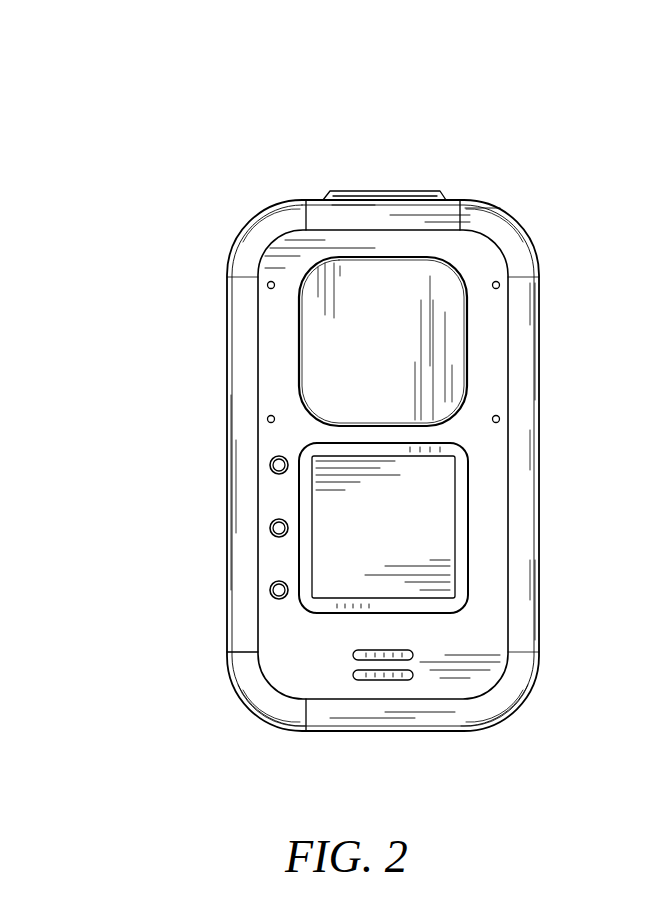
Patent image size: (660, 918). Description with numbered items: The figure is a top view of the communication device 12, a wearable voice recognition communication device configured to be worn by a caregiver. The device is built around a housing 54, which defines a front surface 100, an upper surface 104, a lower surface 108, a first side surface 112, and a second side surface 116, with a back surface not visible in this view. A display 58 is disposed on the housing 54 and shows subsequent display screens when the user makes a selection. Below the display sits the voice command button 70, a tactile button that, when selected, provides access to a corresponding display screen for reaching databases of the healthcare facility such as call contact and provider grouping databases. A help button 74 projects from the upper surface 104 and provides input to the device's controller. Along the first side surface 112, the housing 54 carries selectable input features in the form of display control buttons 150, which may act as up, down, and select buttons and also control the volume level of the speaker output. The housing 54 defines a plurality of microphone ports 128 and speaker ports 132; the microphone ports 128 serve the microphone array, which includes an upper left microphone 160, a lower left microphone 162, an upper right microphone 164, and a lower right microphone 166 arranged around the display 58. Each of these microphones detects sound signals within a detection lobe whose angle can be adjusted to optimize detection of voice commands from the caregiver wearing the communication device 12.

The communication device 12 is at (183, 128).
The housing 54 is at (257, 692).
The display 58 is at (455, 327).
The voice command button 70 is at (420, 545).
The help button 74 is at (375, 191).
The front surface 100 is at (283, 665).
The upper surface 104 is at (452, 199).
The lower surface 108 is at (383, 731).
The first side surface 112 is at (228, 452).
The second side surface 116 is at (538, 443).
The microphone ports 128 is at (267, 285).
The speaker ports 132 is at (413, 675).
The display control buttons 150 is at (273, 465).
The upper left microphone 160 is at (265, 272).
The lower left microphone 162 is at (267, 419).
The upper right microphone 164 is at (500, 285).
The lower right microphone 166 is at (500, 419).